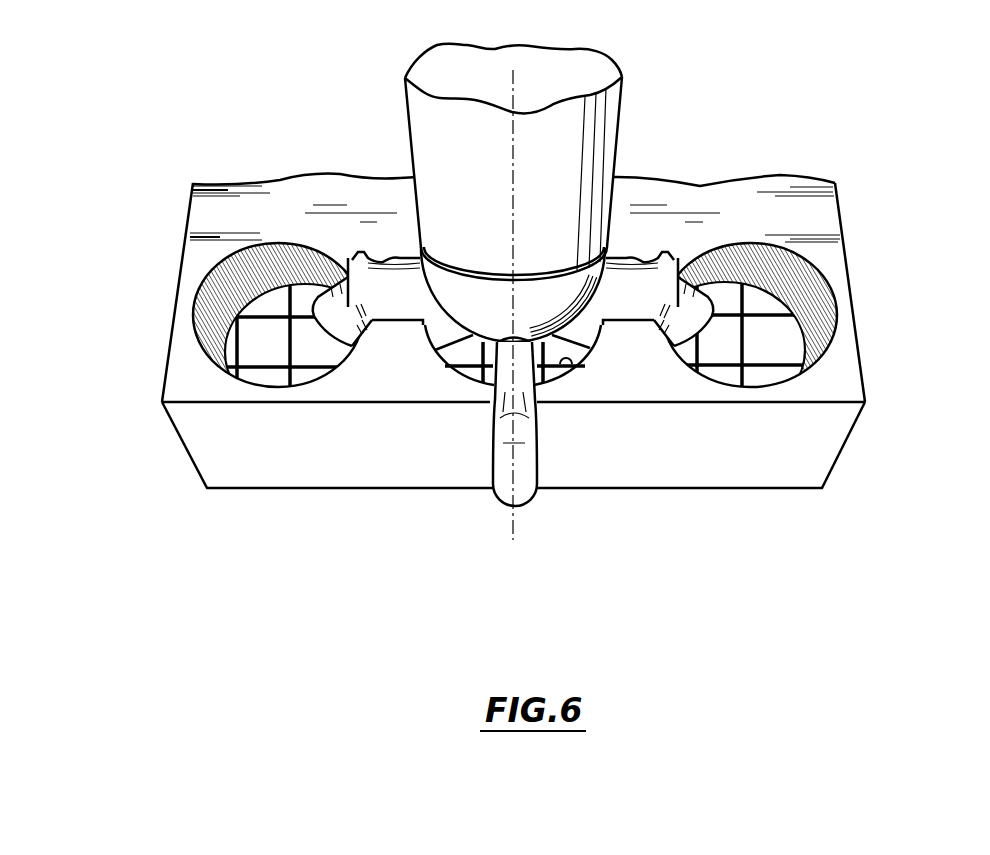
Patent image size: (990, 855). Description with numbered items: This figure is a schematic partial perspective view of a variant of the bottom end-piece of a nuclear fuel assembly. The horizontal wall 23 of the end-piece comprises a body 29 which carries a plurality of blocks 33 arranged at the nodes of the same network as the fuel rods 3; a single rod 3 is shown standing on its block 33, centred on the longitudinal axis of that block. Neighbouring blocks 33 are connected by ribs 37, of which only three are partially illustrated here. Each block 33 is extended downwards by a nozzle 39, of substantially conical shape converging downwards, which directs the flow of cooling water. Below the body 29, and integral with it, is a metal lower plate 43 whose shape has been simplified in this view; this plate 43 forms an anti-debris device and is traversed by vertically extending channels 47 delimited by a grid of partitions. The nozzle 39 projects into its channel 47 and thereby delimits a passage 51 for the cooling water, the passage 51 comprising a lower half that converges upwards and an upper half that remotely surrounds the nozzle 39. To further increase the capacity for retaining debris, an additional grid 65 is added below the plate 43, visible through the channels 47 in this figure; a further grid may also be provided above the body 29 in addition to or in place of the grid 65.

The fuel rod 3 is at (626, 117).
The horizontal wall 23 is at (839, 211).
The body 29 is at (631, 225).
The block 33 is at (457, 297).
The rib 37 is at (391, 277).
The nozzle 39 is at (478, 322).
The lower plate 43 is at (881, 377).
The channel 47 is at (210, 300).
The passage 51 is at (574, 368).
The grid 65 is at (262, 345).